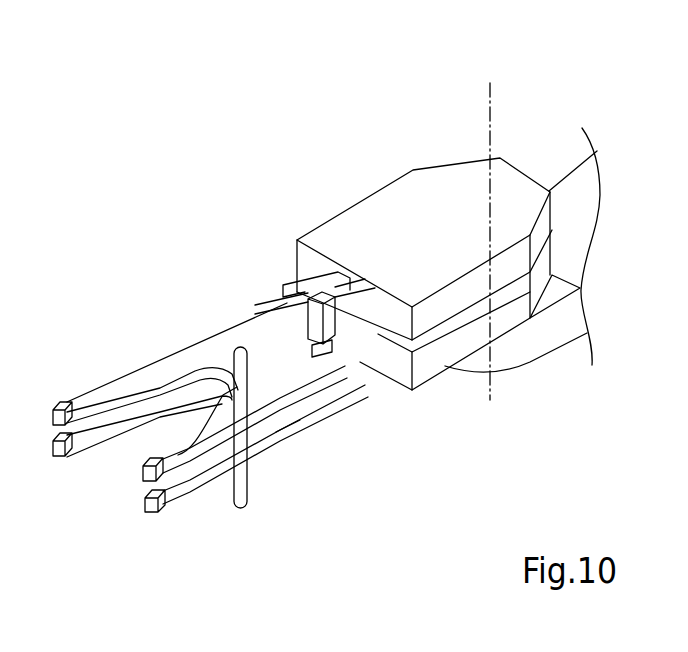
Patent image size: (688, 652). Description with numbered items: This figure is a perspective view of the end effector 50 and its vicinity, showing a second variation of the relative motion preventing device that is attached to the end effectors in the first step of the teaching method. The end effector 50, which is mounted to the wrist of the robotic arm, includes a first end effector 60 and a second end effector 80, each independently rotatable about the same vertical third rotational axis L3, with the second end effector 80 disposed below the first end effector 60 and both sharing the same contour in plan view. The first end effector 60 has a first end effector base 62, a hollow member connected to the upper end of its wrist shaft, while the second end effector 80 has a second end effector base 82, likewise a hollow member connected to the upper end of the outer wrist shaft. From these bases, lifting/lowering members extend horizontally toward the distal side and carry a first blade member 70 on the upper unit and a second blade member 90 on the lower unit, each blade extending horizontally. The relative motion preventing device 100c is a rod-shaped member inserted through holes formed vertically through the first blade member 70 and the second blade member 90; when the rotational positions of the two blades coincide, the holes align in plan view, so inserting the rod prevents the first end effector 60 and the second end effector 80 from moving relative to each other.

The end effector 50 is at (52, 53).
The first end effector 60 is at (145, 342).
The first end effector base 62 is at (447, 182).
The first blade member 70 is at (212, 360).
The second end effector 80 is at (205, 517).
The second end effector base 82 is at (507, 317).
The second blade member 90 is at (277, 430).
The relative motion preventing device 100c is at (249, 493).
The third rotational axis L3 is at (490, 105).